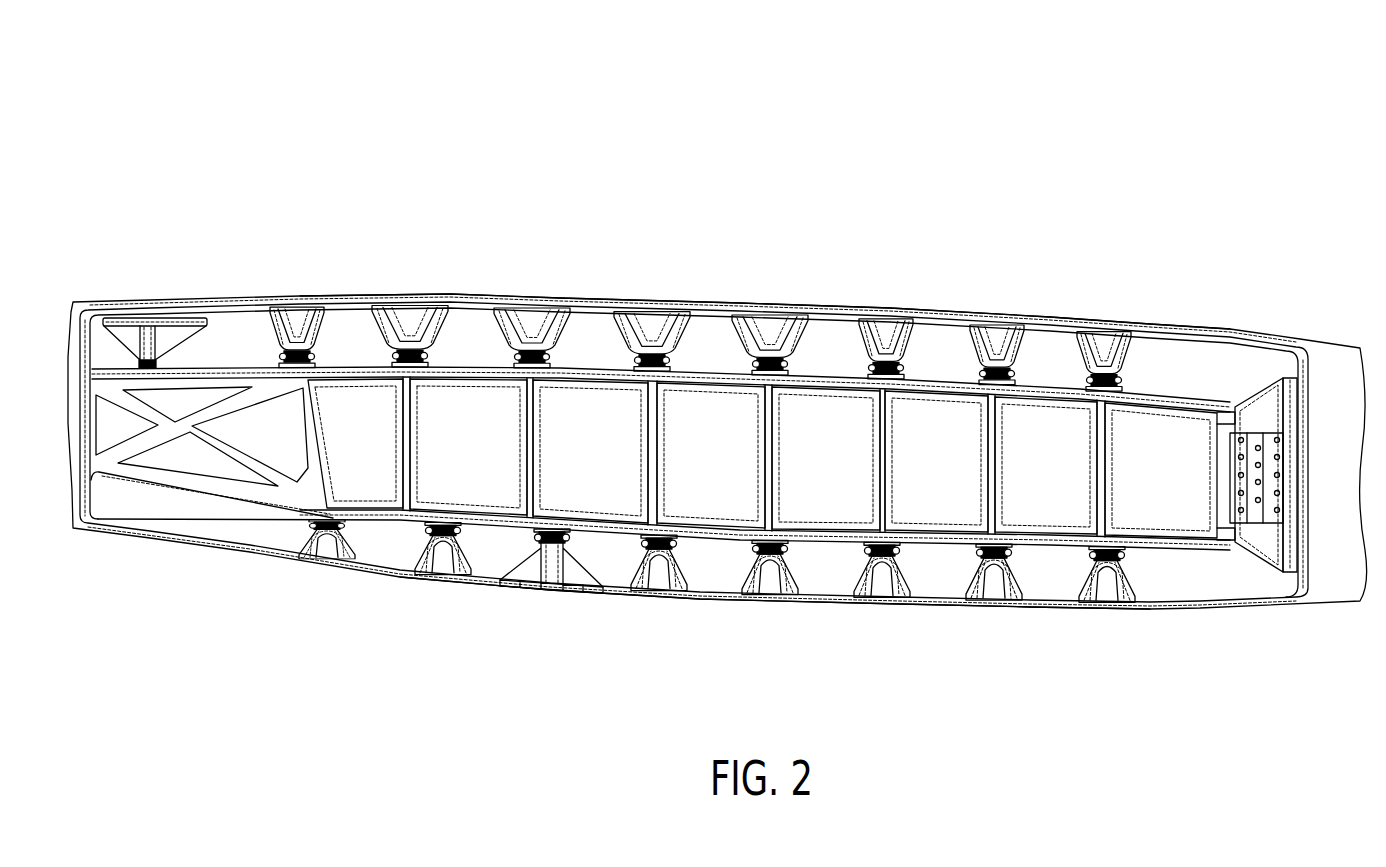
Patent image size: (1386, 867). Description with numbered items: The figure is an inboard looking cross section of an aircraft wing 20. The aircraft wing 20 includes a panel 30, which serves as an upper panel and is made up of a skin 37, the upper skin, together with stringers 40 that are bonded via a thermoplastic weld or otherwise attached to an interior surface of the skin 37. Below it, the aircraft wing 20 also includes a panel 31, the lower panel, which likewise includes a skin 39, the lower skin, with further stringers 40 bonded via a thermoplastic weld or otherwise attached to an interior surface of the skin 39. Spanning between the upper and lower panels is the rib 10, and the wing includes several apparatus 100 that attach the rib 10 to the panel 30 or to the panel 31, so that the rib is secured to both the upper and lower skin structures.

The rib 10 is at (701, 461).
The aircraft wing 20 is at (180, 121).
The panel 30 is at (1058, 269).
The panel 31 is at (872, 650).
The skin 37 is at (1233, 330).
The skin 39 is at (1201, 610).
The stringers 40 is at (297, 318).
The apparatus 100 is at (392, 320).